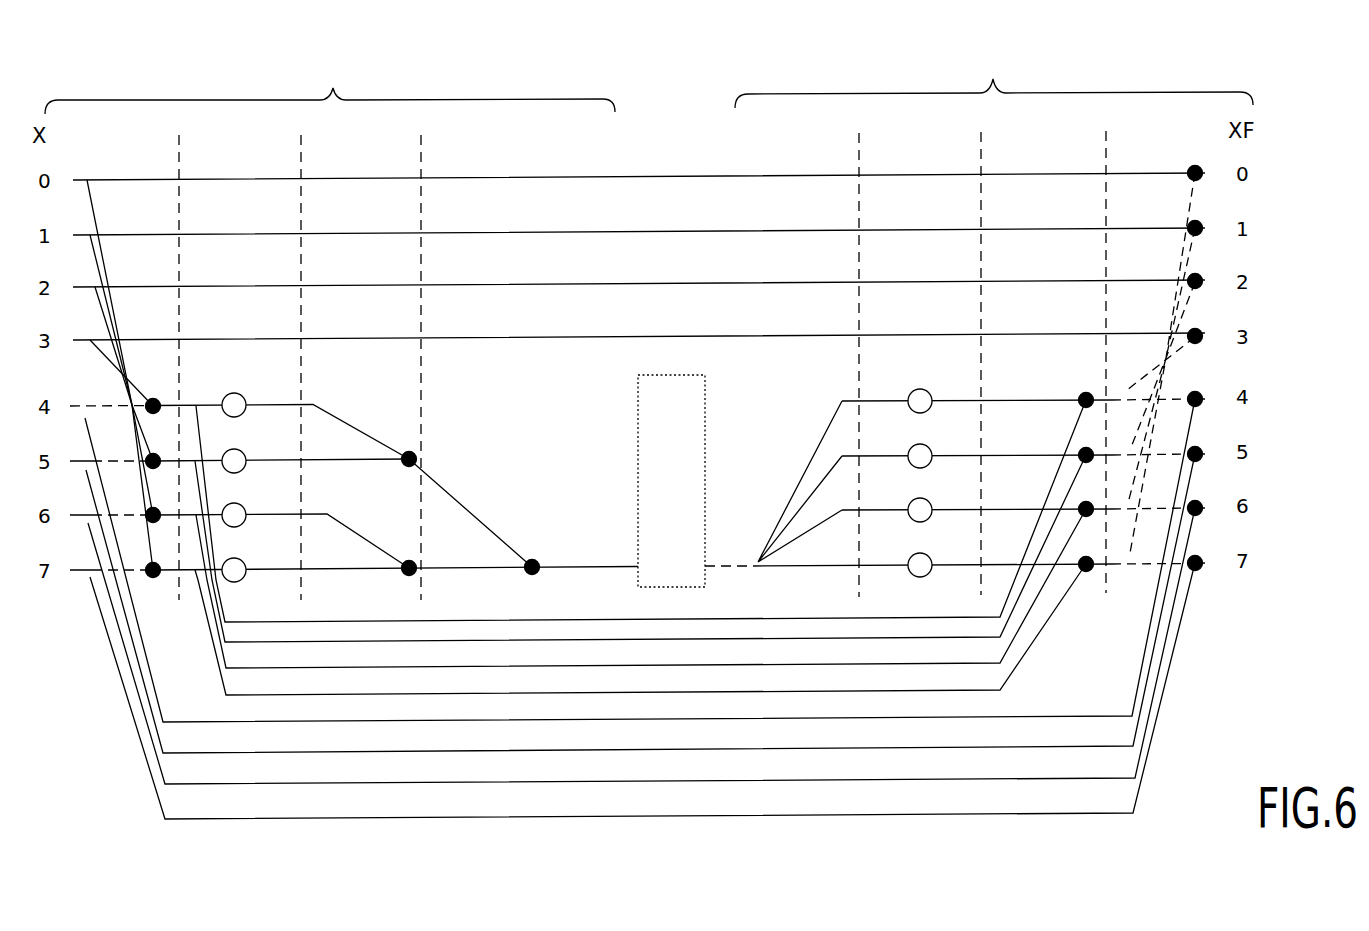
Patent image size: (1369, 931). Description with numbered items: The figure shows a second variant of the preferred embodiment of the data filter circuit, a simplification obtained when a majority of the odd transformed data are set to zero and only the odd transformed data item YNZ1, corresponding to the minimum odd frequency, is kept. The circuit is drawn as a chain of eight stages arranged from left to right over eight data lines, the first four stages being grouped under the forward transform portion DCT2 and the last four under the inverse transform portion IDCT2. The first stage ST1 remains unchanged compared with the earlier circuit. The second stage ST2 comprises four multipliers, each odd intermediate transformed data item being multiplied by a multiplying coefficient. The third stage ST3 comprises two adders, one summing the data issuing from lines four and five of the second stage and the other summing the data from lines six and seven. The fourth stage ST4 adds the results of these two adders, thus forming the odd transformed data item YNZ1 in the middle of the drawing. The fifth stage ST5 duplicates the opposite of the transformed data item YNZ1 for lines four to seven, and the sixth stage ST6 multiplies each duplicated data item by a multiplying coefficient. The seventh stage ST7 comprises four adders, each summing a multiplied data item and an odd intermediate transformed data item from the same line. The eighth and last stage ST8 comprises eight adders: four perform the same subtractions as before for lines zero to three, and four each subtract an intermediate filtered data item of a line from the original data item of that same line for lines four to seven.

The first stage ST1 is at (148, 362).
The second stage ST2 is at (263, 362).
The third stage ST3 is at (383, 362).
The fourth stage ST4 is at (485, 136).
The fifth stage ST5 is at (822, 360).
The sixth stage ST6 is at (940, 358).
The seventh stage ST7 is at (1065, 357).
The eighth stage ST8 is at (1155, 132).
The forward DCT transform block DCT2 is at (330, 78).
The inverse DCT transform block IDCT2 is at (994, 74).
The odd transformed data item YNZ1 is at (671, 481).